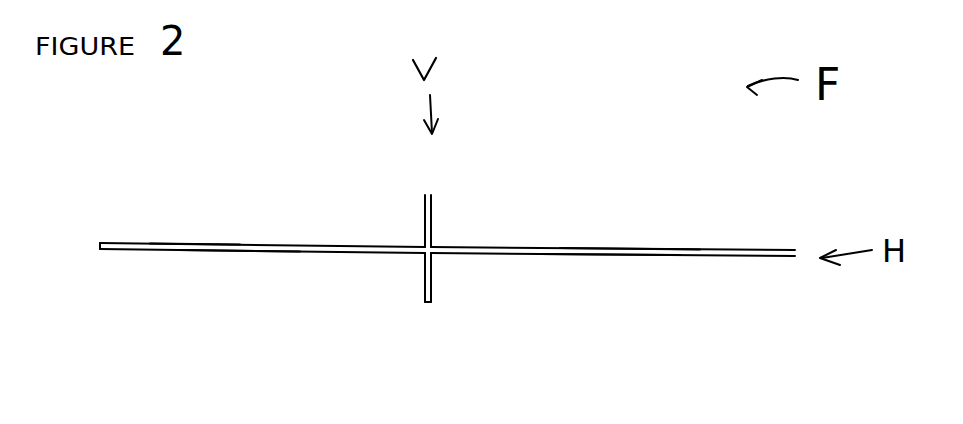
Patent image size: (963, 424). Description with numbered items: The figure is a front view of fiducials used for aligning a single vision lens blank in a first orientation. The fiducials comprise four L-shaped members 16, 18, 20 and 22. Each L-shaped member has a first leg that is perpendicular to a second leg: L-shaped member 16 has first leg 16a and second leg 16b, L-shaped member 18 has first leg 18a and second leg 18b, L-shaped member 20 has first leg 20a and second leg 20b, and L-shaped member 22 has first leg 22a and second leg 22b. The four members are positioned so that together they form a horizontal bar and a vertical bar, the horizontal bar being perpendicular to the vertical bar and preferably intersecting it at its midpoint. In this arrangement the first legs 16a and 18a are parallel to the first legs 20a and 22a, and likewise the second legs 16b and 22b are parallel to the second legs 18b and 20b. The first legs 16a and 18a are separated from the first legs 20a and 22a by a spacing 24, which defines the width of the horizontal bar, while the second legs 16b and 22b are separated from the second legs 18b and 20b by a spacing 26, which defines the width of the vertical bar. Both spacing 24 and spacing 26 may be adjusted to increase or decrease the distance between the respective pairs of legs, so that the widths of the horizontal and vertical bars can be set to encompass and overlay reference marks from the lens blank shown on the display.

The L-shaped member 16 is at (298, 208).
The first leg 16a is at (190, 242).
The second leg 16b is at (424, 220).
The L-shaped member 18 is at (530, 225).
The first leg 18a is at (622, 250).
The second leg 18b is at (433, 240).
The L-shaped member 20 is at (495, 305).
The first leg 20a is at (580, 257).
The second leg 20b is at (433, 290).
The L-shaped member 22 is at (345, 306).
The first leg 22a is at (240, 250).
The second leg 22b is at (424, 274).
The spacing 24 is at (98, 246).
The spacing 26 is at (428, 306).